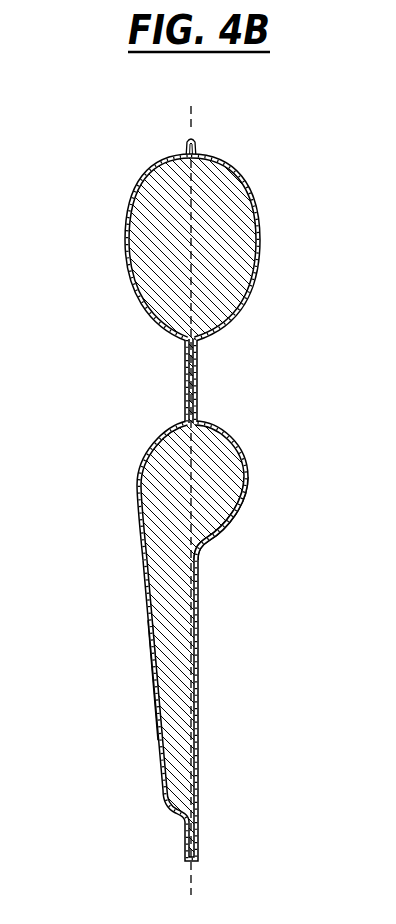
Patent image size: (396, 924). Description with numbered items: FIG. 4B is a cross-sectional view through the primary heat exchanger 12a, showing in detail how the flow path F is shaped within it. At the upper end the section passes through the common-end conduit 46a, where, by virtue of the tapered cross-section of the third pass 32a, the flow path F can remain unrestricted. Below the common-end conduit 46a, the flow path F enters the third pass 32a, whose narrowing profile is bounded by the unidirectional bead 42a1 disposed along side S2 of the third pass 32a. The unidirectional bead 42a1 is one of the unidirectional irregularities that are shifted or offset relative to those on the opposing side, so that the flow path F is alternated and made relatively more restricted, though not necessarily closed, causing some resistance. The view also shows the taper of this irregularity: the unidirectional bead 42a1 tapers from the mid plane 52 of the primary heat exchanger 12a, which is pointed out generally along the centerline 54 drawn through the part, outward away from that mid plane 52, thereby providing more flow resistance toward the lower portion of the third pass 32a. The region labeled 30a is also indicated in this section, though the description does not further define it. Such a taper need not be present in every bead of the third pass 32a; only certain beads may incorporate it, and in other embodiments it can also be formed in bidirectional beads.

The primary heat exchanger 12a is at (200, 470).
The centerline 54 is at (194, 134).
The upper balloon chamber 30a is at (124, 219).
The flow path F is at (205, 230).
The common-end conduit 46a is at (188, 426).
The mid plane 52 is at (212, 473).
The unidirectional bead 42a1 is at (202, 543).
The side S2 is at (147, 623).
The third pass 32a is at (264, 669).